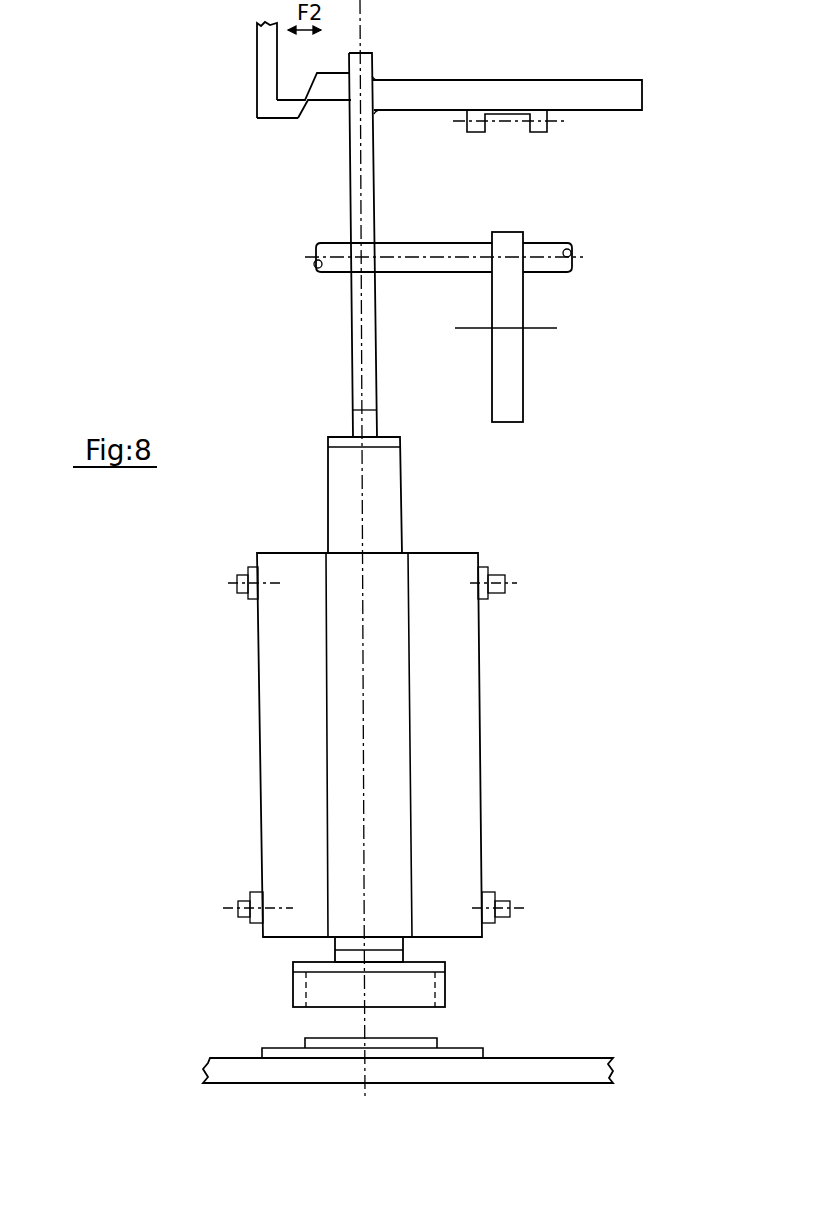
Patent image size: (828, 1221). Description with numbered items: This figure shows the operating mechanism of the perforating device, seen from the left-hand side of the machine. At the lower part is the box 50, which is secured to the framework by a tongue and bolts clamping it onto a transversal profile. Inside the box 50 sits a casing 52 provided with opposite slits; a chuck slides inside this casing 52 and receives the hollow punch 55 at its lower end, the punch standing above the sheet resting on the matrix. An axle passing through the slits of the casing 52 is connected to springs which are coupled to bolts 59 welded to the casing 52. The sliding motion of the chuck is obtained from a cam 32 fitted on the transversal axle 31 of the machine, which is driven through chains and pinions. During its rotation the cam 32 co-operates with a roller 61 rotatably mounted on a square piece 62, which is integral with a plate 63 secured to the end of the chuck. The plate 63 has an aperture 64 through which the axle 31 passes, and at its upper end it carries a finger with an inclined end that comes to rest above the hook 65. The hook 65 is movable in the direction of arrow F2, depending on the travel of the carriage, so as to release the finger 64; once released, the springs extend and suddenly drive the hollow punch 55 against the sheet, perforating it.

The transversal axle 31 is at (460, 247).
The cam 32 is at (513, 292).
The box 50 is at (453, 797).
The casing 52 is at (375, 518).
The hollow punch 55 is at (423, 993).
The bolts 59 is at (512, 893).
The roller 61 is at (507, 123).
The square piece 62 is at (411, 99).
The plate 63 is at (367, 192).
The aperture 64 is at (327, 90).
The hook 65 is at (263, 95).